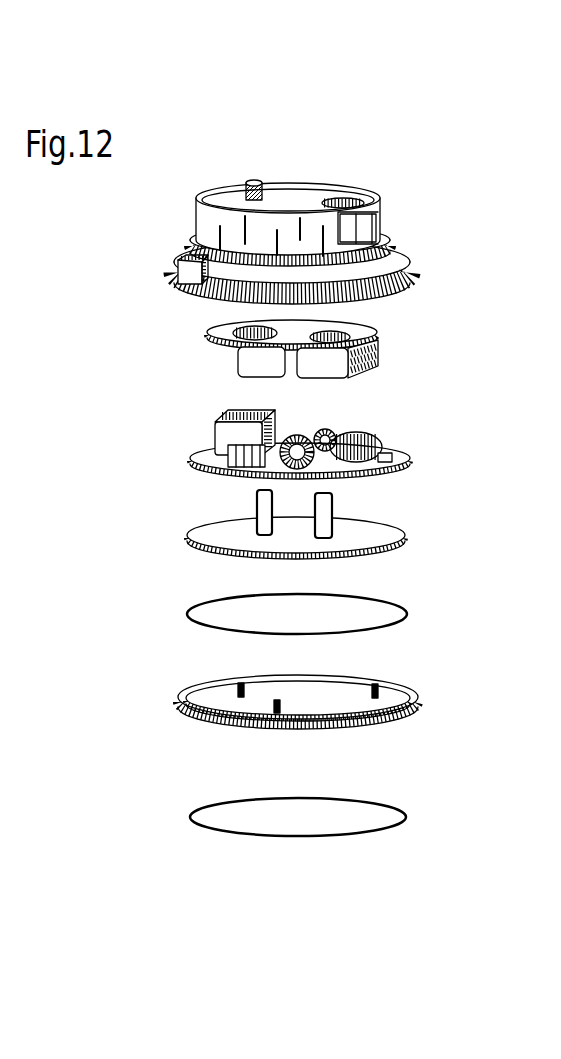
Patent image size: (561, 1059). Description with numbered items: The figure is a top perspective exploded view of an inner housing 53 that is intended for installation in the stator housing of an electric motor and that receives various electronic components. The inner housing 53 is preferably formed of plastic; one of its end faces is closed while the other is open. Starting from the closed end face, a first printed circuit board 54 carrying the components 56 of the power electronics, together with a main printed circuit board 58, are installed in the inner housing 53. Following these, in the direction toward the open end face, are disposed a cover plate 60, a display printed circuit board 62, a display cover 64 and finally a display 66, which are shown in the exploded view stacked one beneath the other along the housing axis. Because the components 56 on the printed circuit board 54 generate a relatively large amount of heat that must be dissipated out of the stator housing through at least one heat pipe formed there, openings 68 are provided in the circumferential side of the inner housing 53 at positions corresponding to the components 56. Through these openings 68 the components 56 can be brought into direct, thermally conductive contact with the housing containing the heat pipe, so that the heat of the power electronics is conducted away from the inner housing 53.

The inner housing 53 is at (207, 227).
The openings 68 is at (380, 234).
The first printed circuit board 54 is at (207, 333).
The components 56 is at (242, 362).
The main printed circuit board 58 is at (393, 466).
The cover plate 60 is at (188, 533).
The display printed circuit board 62 is at (188, 614).
The display cover 64 is at (187, 705).
The display 66 is at (192, 815).